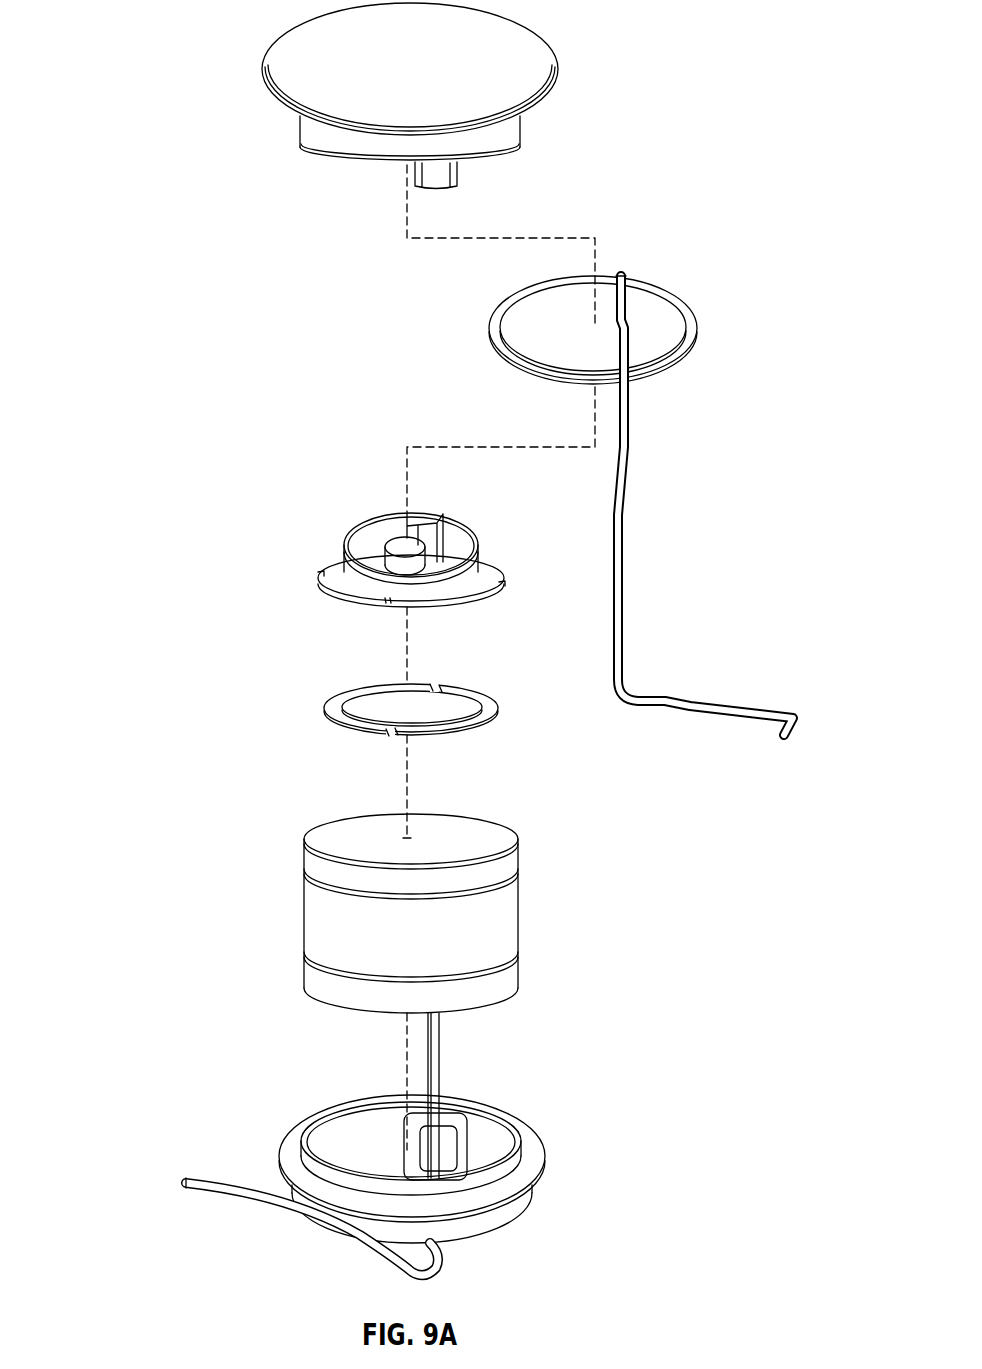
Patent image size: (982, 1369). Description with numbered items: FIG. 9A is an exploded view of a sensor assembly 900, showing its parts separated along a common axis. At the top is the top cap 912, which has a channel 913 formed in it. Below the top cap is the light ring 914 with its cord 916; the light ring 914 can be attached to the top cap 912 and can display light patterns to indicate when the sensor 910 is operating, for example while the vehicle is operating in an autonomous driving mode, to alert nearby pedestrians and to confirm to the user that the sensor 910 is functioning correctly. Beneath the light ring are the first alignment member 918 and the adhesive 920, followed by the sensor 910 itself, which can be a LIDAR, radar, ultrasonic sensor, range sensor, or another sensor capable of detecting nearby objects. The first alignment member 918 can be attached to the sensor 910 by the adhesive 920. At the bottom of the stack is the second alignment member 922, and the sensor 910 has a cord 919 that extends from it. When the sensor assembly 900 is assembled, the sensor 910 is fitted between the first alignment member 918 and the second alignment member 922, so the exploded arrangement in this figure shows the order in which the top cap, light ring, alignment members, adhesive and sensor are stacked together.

The sensor assembly 900 is at (157, 129).
The top cap 912 is at (543, 72).
The channel 913 is at (455, 172).
The light ring 914 is at (698, 322).
The cord 916 is at (623, 558).
The first alignment member 918 is at (340, 593).
The adhesive 920 is at (350, 727).
The sensor 910 is at (517, 907).
The second alignment member 922 is at (533, 1128).
The cord 919 is at (208, 1182).